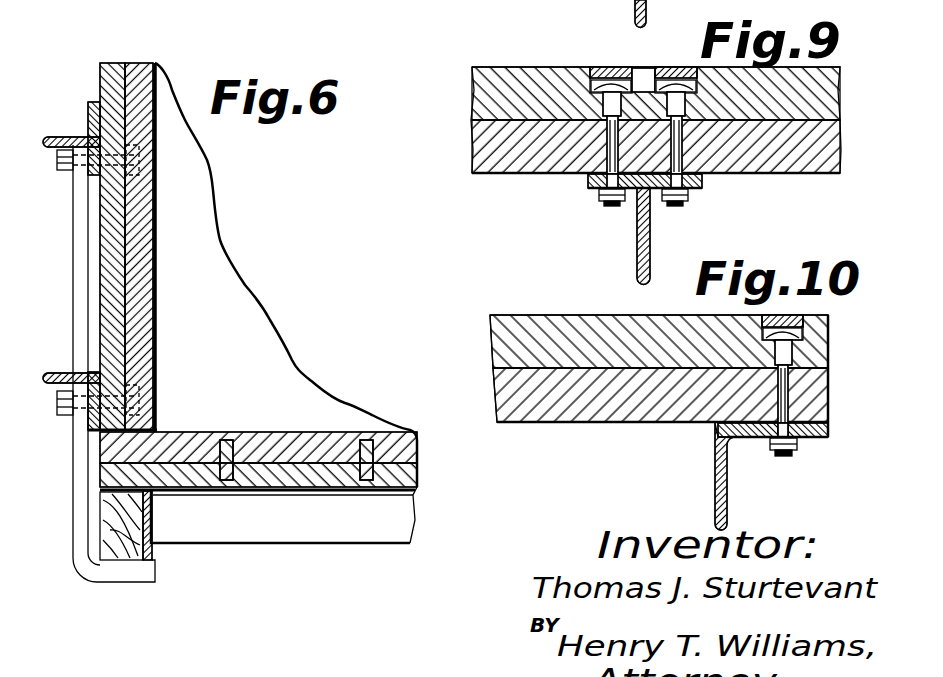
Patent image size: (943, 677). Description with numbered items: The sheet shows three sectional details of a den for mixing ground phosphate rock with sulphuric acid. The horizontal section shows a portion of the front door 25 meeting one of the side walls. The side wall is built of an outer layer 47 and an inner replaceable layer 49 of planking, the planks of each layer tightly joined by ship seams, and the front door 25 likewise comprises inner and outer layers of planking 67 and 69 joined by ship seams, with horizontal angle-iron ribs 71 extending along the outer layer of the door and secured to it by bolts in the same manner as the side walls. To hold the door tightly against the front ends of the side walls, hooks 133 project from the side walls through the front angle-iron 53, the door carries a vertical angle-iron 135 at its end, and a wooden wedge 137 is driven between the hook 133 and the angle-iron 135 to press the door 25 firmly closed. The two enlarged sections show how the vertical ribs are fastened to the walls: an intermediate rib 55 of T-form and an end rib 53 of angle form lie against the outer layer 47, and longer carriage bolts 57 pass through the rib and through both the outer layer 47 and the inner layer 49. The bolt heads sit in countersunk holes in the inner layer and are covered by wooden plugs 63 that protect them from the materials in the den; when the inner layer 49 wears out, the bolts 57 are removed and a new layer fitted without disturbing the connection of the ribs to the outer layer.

In FIG. 6, the front door 25 is at (352, 494).
In FIG. 6, the outer layer 47 is at (117, 205).
In FIG. 9, the outer layer 47 is at (490, 145).
In FIG. 10, the outer layer 47 is at (505, 390).
In FIG. 6, the inner replaceable layer 49 is at (133, 233).
In FIG. 9, the inner replaceable layer 49 is at (500, 92).
In FIG. 10, the inner replaceable layer 49 is at (510, 333).
In FIG. 10, the end rib 53 is at (716, 482).
In FIG. 9, the intermediate rib 55 is at (637, 240).
In FIG. 9, the bolt 57 is at (590, 168).
In FIG. 10, the bolt 57 is at (790, 420).
In FIG. 9, the wooden plug 63 is at (607, 70).
In FIG. 10, the wooden plug 63 is at (800, 322).
In FIG. 6, the inner layer of planking 67 is at (187, 441).
In FIG. 6, the outer layer of planking 69 is at (190, 478).
In FIG. 6, the angle-iron rib 71 is at (265, 528).
In FIG. 6, the hook 133 is at (78, 311).
In FIG. 6, the angle-iron 135 is at (152, 521).
In FIG. 6, the wooden wedge 137 is at (120, 552).